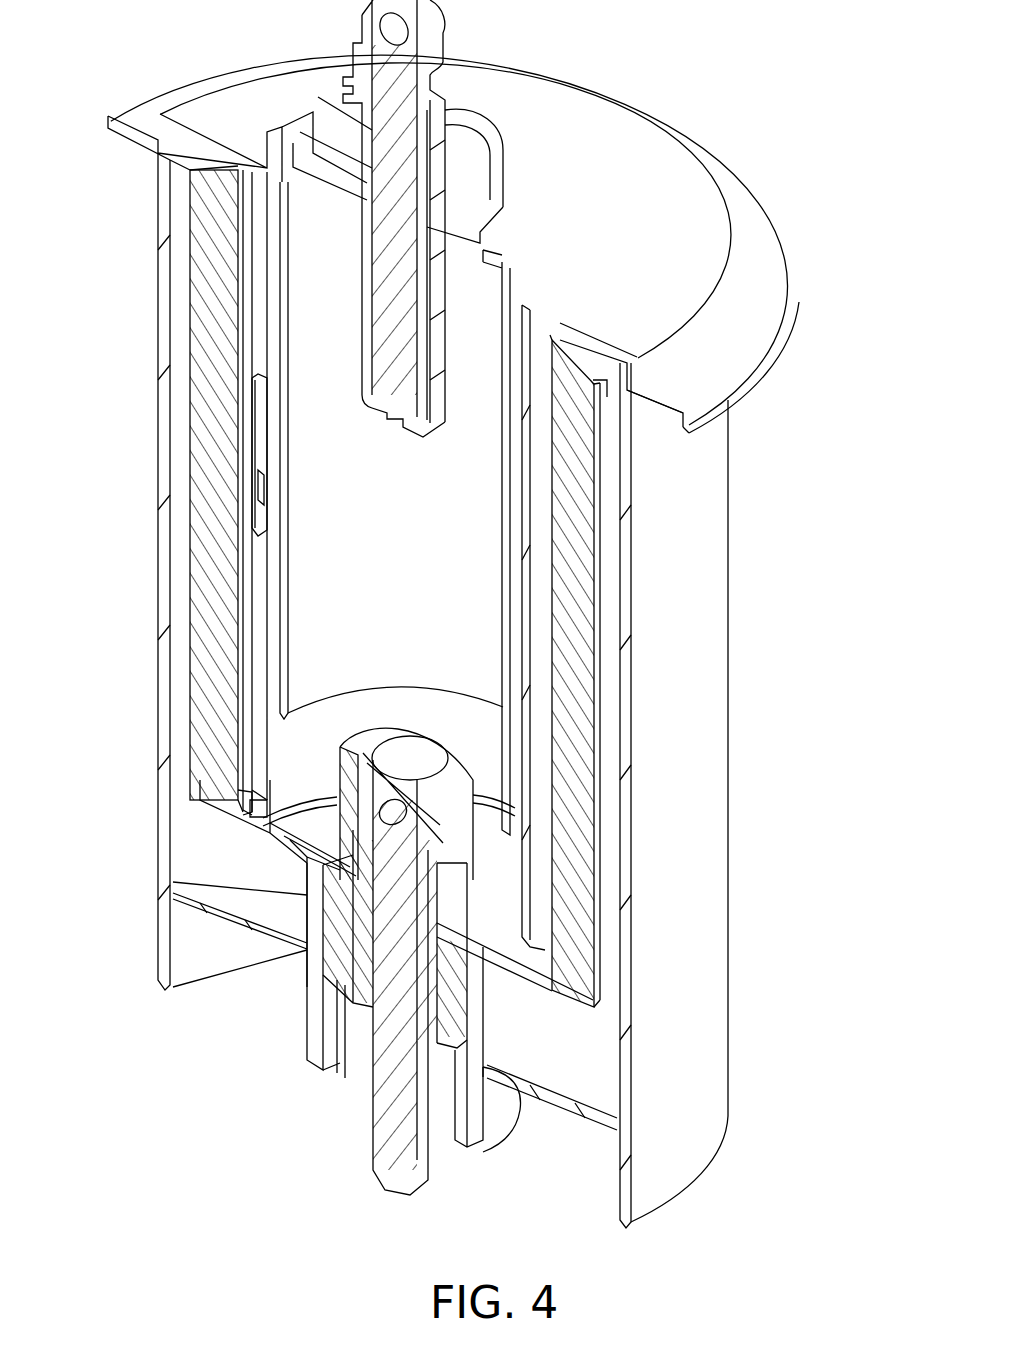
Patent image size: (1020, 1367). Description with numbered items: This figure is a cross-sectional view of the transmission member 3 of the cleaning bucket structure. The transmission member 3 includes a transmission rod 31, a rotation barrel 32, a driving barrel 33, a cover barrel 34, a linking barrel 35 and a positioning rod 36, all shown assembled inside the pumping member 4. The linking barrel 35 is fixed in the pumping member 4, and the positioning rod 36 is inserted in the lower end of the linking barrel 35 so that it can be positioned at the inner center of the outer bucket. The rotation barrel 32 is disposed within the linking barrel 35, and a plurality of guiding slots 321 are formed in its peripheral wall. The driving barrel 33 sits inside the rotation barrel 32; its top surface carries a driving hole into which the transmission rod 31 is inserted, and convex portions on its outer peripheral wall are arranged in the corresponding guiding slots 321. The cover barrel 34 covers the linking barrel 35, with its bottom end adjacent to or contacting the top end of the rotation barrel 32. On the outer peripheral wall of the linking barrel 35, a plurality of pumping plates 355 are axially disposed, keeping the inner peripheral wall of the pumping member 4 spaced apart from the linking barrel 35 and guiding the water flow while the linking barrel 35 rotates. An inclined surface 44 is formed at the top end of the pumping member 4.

The transmission member 3 is at (455, 82).
The pumping member 4 is at (745, 620).
The transmission rod 31 is at (390, 135).
The rotation barrel 32 is at (248, 441).
The guiding slots 321 is at (265, 486).
The driving barrel 33 is at (288, 302).
The cover barrel 34 is at (660, 172).
The linking barrel 35 is at (206, 577).
The pumping plates 355 is at (588, 772).
The positioning rod 36 is at (376, 1100).
The inclined surface 44 is at (723, 357).